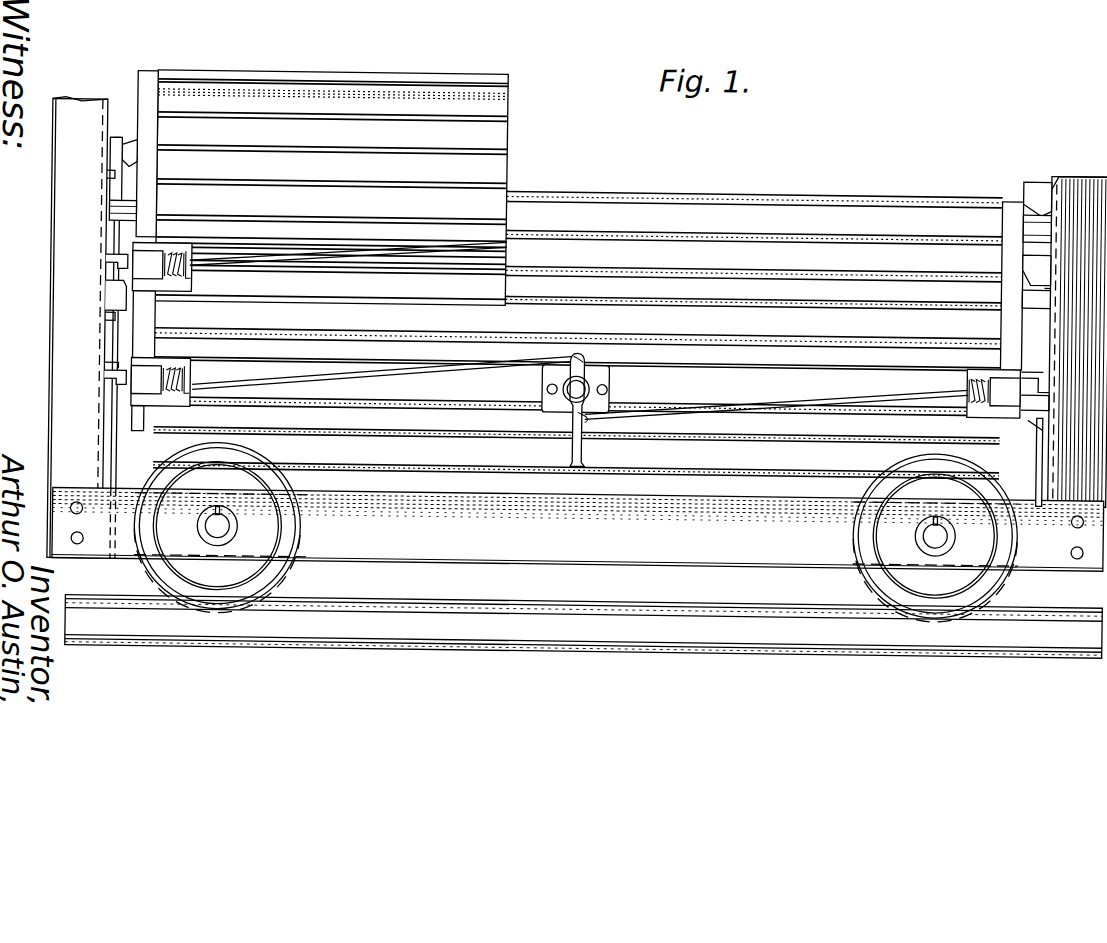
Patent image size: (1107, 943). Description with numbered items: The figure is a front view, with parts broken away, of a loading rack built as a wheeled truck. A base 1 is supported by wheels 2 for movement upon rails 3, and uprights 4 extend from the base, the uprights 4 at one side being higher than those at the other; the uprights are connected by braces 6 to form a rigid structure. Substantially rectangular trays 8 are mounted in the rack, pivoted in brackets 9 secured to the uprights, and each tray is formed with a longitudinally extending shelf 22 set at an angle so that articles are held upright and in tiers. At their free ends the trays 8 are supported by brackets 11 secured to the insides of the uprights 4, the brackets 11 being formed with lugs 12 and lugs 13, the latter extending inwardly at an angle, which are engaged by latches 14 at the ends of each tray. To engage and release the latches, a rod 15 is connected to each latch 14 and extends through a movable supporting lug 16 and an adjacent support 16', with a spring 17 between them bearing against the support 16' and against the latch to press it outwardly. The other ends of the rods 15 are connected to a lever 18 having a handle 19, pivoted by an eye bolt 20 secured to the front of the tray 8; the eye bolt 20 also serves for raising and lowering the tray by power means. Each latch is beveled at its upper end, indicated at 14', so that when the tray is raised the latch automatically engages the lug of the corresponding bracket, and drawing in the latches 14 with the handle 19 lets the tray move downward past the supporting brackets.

The base 1 is at (735, 553).
The wheels 2 is at (274, 567).
The rails 3 is at (544, 636).
The uprights 4 is at (57, 296).
The braces 6 is at (146, 85).
The trays 8 is at (1008, 202).
The brackets 9 is at (123, 217).
The brackets 11 is at (110, 182).
The lugs 12 is at (112, 178).
The lugs 13 is at (127, 145).
The latches 14 is at (550, 341).
The beveled upper end of latch 14' is at (549, 386).
The rod 15 is at (430, 246).
The movable supporting lug 16 is at (576, 329).
The support 16' is at (576, 358).
The spring 17 is at (170, 282).
The lever 18 is at (572, 404).
The handle 19 is at (585, 455).
The eye bolt 20 is at (586, 378).
The shelf 22 is at (492, 175).